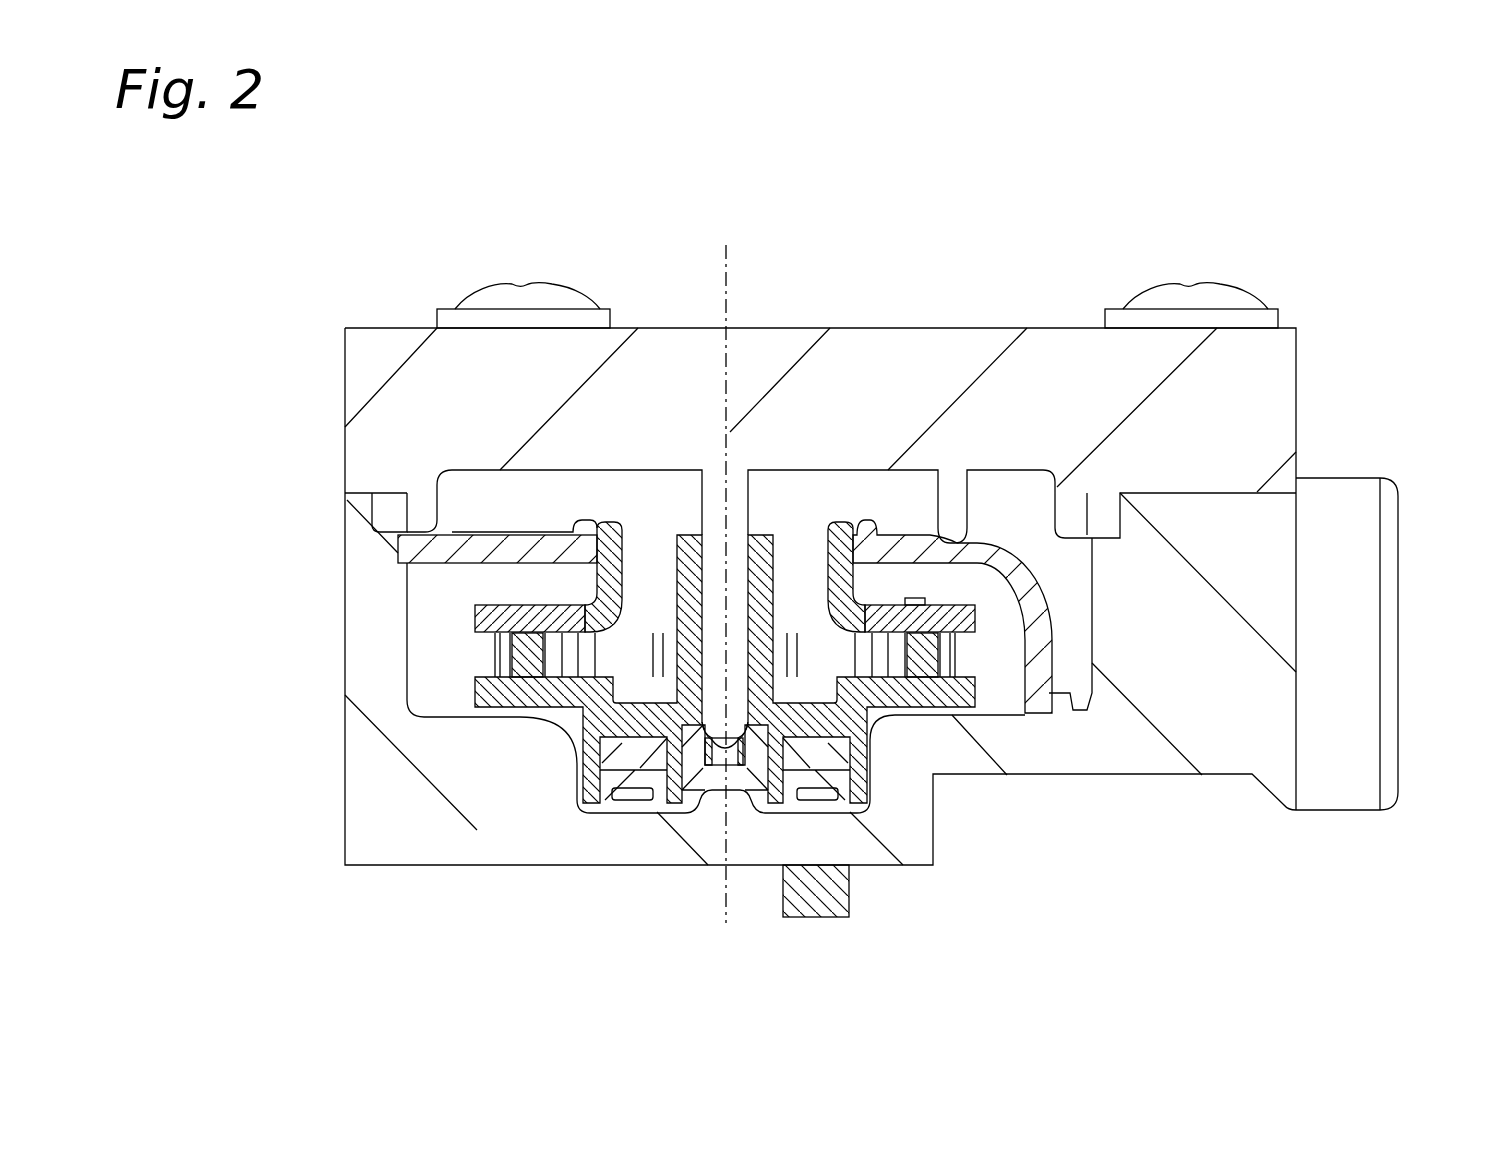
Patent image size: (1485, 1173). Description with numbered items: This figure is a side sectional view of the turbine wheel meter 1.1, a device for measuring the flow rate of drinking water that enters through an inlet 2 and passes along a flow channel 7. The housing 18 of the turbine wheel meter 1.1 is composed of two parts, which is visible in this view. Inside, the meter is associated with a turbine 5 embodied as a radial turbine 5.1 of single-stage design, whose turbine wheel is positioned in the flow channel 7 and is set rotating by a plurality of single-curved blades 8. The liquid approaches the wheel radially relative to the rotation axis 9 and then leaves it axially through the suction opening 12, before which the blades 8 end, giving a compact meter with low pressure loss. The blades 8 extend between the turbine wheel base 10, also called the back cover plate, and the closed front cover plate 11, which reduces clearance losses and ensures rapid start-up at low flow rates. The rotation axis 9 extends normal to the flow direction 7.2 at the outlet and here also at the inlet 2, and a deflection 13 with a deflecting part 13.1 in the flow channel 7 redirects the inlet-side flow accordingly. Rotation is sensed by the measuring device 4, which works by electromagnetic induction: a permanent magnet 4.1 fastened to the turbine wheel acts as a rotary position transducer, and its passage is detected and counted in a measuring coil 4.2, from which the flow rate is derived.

The turbine wheel meter 1.1 is at (925, 215).
The inlet 2 is at (1350, 660).
The measuring device 4 is at (843, 813).
The permanent magnet 4.1 is at (847, 747).
The measuring coil 4.2 is at (822, 880).
The turbine 5 is at (473, 690).
The radial turbine 5.1 is at (856, 669).
The flow channel 7 is at (537, 498).
The flow direction 7.2 is at (797, 570).
The blades 8 is at (523, 652).
The rotation axis 9 is at (730, 268).
The turbine wheel base 10 is at (525, 688).
The front cover plate 11 is at (597, 537).
The suction opening 12 is at (646, 612).
The deflection 13 is at (980, 592).
The deflecting part 13.1 is at (1040, 713).
The housing 18 is at (383, 387).